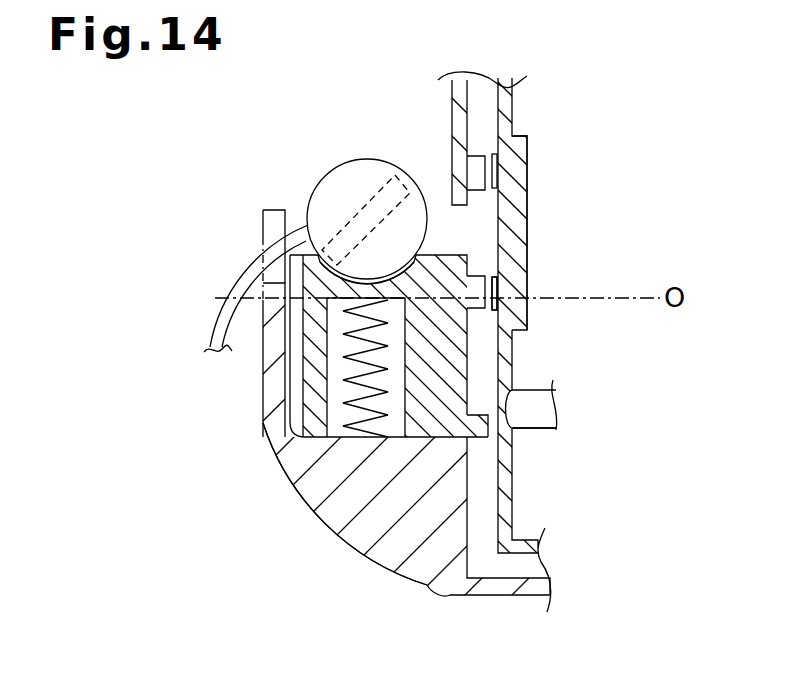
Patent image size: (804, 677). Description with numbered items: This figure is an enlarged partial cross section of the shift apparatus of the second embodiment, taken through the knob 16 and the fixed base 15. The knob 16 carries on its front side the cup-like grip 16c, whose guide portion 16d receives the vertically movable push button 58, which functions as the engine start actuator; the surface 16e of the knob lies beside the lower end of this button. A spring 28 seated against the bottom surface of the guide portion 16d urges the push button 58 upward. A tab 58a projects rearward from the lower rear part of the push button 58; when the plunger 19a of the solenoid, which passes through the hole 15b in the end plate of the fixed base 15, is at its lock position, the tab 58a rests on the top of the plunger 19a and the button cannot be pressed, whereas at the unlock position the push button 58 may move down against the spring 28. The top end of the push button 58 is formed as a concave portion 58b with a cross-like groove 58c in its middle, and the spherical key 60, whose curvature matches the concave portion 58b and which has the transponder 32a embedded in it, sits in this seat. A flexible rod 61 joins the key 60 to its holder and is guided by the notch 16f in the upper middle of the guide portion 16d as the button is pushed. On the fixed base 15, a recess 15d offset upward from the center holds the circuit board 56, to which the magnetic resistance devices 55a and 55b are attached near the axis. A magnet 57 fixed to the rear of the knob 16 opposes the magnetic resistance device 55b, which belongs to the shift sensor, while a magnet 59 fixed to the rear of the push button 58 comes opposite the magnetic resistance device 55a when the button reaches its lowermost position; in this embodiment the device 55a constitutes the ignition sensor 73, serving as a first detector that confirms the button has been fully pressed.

The fixed base 15 is at (518, 496).
The hole 15b is at (532, 390).
The recess 15d is at (520, 198).
The knob 16 is at (445, 88).
The grip 16c is at (379, 552).
The guide portion 16d is at (270, 344).
The upper surface of housing 16e is at (434, 439).
The notch 16f is at (272, 208).
The plunger 19a is at (541, 428).
The spring 28 is at (291, 418).
The transponder 32a is at (362, 205).
The magnetic resistance device 55a is at (500, 300).
The magnetic resistance device 55b is at (500, 167).
The circuit board 56 is at (512, 240).
The magnet 57 is at (456, 134).
The push button 58 is at (440, 258).
The tab 58a is at (474, 404).
The concave portion 58b is at (396, 295).
The cross-like groove 58c is at (363, 283).
The magnet 59 is at (478, 307).
The spherical key 60 is at (346, 166).
The flexible rod 61 is at (244, 267).
The ignition sensor 73 is at (606, 303).